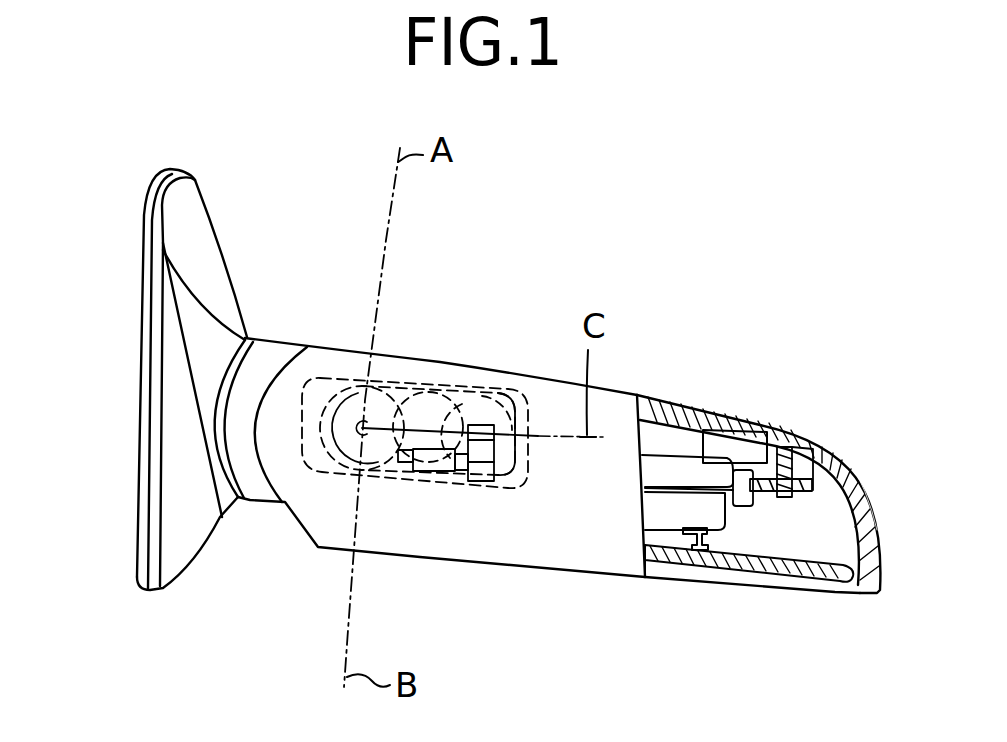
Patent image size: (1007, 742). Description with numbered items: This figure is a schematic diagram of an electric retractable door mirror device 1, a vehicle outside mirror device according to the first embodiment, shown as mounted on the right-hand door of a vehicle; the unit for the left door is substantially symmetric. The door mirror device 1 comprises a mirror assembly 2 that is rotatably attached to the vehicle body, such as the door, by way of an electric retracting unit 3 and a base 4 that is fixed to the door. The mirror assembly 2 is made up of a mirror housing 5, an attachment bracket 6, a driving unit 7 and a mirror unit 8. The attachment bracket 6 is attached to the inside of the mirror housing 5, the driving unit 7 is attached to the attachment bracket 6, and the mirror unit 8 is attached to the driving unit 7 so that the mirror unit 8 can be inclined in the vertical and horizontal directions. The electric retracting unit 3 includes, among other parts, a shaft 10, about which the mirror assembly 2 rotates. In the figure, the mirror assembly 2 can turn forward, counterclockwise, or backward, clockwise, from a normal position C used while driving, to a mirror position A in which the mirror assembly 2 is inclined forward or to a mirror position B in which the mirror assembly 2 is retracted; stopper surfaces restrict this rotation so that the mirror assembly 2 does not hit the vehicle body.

The door mirror device 1 is at (513, 357).
The mirror assembly 2 is at (685, 400).
The electric retracting unit 3 is at (522, 490).
The base 4 is at (137, 372).
The mirror housing 5 is at (866, 478).
The attachment bracket 6 is at (813, 450).
The driving unit 7 is at (702, 455).
The mirror unit 8 is at (832, 588).
The shaft 10 is at (362, 430).